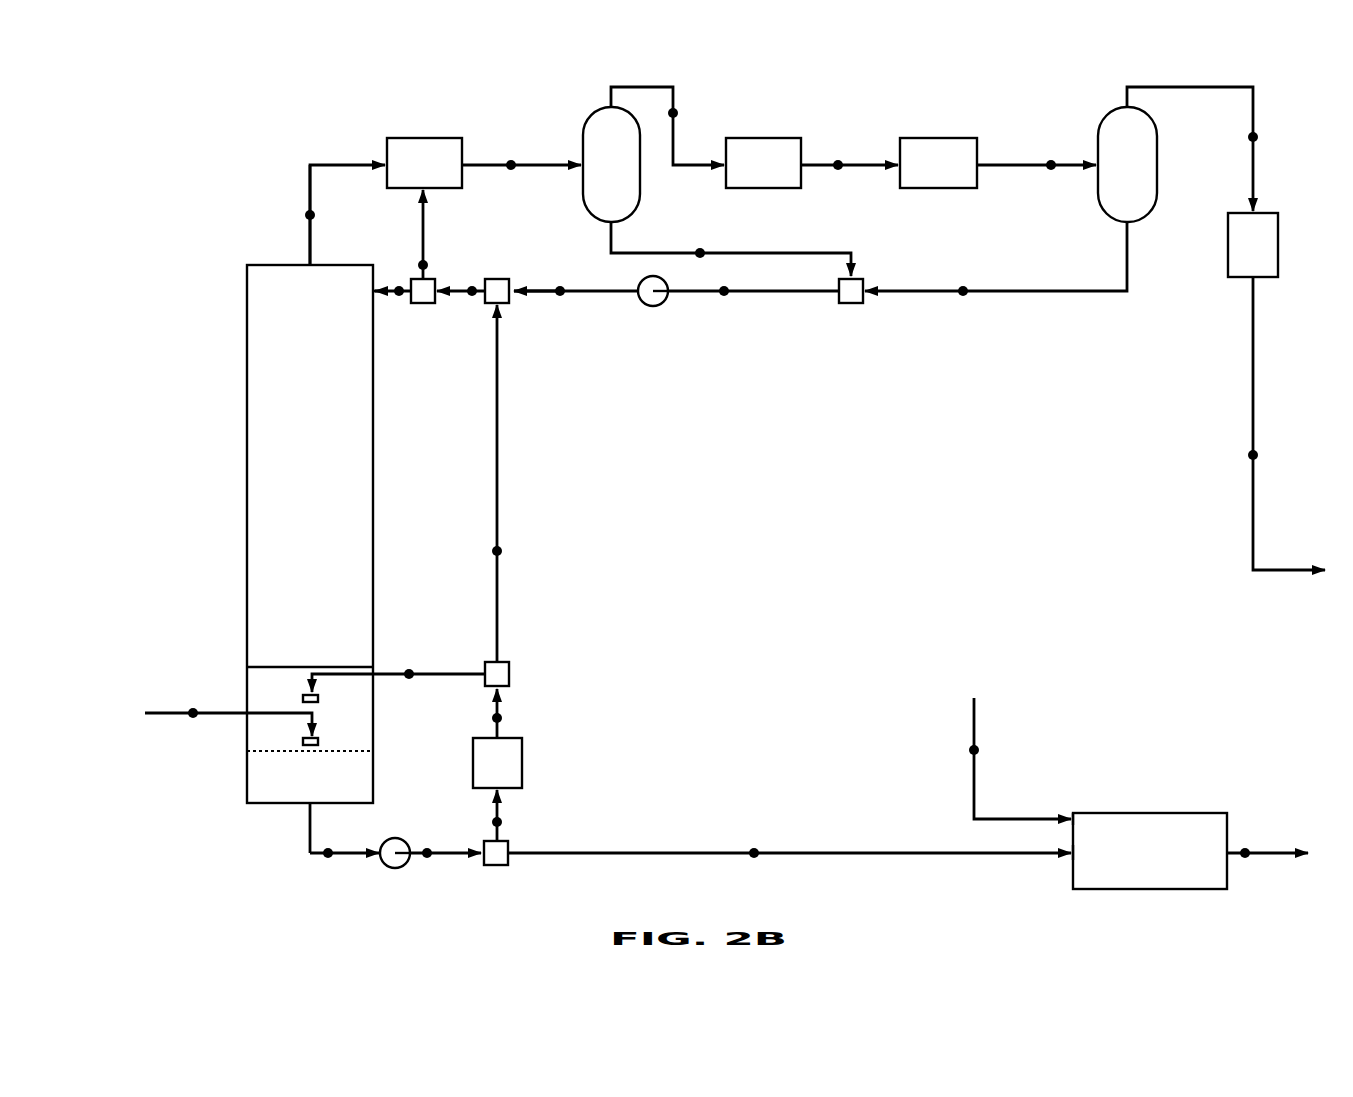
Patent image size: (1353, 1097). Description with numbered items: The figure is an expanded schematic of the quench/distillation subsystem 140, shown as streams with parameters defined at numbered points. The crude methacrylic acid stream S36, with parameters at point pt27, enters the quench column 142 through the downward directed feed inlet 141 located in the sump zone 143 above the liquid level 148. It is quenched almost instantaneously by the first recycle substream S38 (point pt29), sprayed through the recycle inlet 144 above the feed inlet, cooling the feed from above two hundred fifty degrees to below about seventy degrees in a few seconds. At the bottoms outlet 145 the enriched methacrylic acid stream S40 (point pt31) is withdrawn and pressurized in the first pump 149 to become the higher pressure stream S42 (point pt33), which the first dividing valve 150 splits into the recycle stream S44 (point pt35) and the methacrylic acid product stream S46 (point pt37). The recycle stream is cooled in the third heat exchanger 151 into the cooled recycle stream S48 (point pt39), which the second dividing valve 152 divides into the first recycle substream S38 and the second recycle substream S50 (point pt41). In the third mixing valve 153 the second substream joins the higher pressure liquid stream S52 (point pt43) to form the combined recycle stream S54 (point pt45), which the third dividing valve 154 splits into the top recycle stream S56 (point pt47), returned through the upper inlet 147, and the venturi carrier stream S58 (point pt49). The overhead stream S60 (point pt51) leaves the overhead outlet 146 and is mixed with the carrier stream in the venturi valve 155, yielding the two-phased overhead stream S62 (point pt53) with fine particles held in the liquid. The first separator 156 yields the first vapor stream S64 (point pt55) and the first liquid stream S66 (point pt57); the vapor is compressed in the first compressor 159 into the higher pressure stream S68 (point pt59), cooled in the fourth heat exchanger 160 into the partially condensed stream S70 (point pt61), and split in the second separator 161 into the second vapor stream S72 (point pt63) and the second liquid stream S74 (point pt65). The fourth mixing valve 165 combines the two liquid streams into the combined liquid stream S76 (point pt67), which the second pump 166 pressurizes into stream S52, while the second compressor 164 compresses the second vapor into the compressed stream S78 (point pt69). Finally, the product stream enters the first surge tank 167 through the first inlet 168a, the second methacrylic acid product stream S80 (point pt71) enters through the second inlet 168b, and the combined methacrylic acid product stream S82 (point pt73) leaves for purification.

The quench/distillation subsystem 140 is at (218, 531).
The feed inlet 141 is at (319, 742).
The quench column 142 is at (310, 534).
The sump zone 143 is at (313, 660).
The recycle inlet 144 is at (303, 697).
The bottoms outlet 145 is at (308, 808).
The overhead outlet 146 is at (311, 270).
The upper inlet 147 is at (372, 292).
The liquid level 148 is at (350, 753).
The first pump 149 is at (382, 862).
The first dividing valve 150 is at (497, 866).
The third heat exchanger 151 is at (497, 763).
The second dividing valve 152 is at (510, 667).
The third mixing valve 153 is at (500, 292).
The third dividing valve 154 is at (424, 297).
The venturi valve 155 is at (424, 163).
The first separator 156 is at (611, 164).
The first compressor 159 is at (763, 163).
The fourth heat exchanger 160 is at (938, 163).
The second separator 161 is at (1127, 164).
The second compressor 164 is at (1253, 245).
The fourth mixing valve 165 is at (863, 302).
The second pump 166 is at (660, 302).
The first surge tank 167 is at (1150, 851).
The first inlet 168a is at (1075, 852).
The second inlet 168b is at (1082, 818).
The crude methacrylic acid stream S36 is at (236, 712).
The first recycle substream S38 is at (385, 673).
The enriched methacrylic acid stream S40 is at (347, 858).
The higher pressure methacrylic acid stream S42 is at (447, 850).
The recycle stream S44 is at (500, 800).
The methacrylic acid product stream S46 is at (780, 850).
The cooled recycle stream S48 is at (500, 700).
The second recycle substream S50 is at (500, 500).
The higher pressure liquid stream S52 is at (592, 297).
The combined recycle stream S54 is at (461, 298).
The top recycle stream S56 is at (394, 298).
The venturi carrier stream S58 is at (425, 225).
The overhead stream S60 is at (330, 165).
The two-phased overhead stream S62 is at (535, 162).
The first vapor stream S64 is at (673, 145).
The first liquid stream S66 is at (818, 253).
The higher pressure stream S68 is at (863, 165).
The cooled partially condensed stream S70 is at (1083, 160).
The second vapor stream S72 is at (1244, 97).
The second liquid stream S74 is at (988, 290).
The combined liquid stream S76 is at (768, 294).
The compressed stream S78 is at (1252, 545).
The second methacrylic acid product stream S80 is at (972, 713).
The combined methacrylic acid product stream S82 is at (1280, 855).
The point pt27 is at (192, 716).
The point pt29 is at (408, 678).
The point pt31 is at (327, 856).
The point pt33 is at (427, 857).
The point pt35 is at (500, 822).
The point pt37 is at (754, 848).
The point pt39 is at (500, 717).
The point pt41 is at (496, 548).
The point pt43 is at (560, 297).
The point pt45 is at (472, 296).
The point pt47 is at (397, 287).
The point pt49 is at (426, 263).
The point pt51 is at (306, 215).
The point pt53 is at (509, 160).
The point pt55 is at (673, 113).
The point pt57 is at (700, 253).
The point pt59 is at (838, 160).
The point pt61 is at (1052, 160).
The point pt63 is at (1250, 175).
The point pt65 is at (962, 297).
The point pt67 is at (724, 297).
The point pt69 is at (1247, 455).
The point pt71 is at (975, 748).
The point pt73 is at (1245, 848).